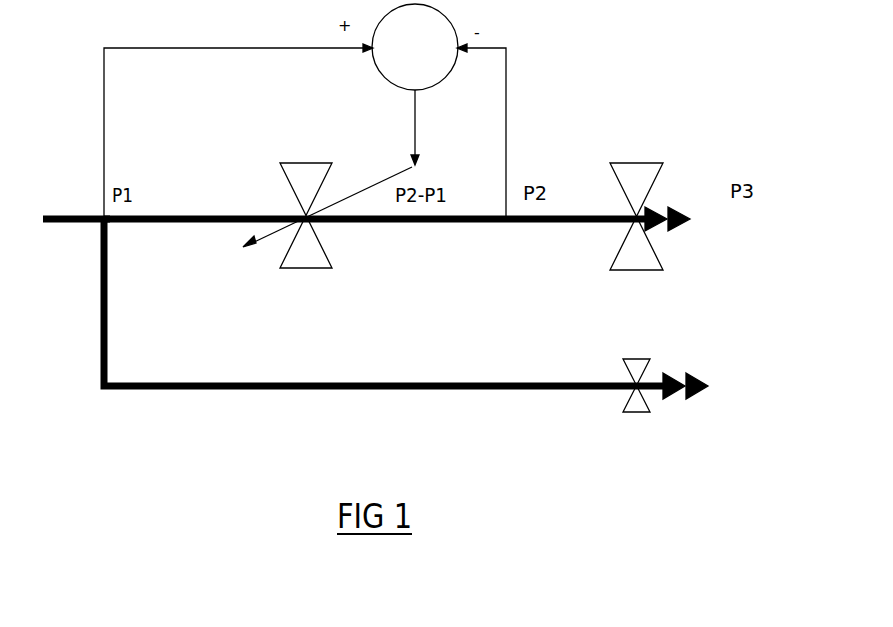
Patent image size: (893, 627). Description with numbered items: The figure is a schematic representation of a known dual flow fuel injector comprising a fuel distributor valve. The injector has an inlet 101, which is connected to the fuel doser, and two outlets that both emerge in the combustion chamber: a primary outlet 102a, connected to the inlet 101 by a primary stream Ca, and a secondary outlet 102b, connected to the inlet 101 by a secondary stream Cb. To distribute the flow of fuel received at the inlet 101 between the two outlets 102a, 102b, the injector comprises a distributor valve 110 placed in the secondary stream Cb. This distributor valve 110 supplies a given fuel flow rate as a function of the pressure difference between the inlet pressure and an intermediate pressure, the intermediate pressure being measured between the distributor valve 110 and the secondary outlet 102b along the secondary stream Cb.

The inlet 101 is at (70, 223).
The distributor valve 110 is at (283, 183).
The primary outlet 102a is at (707, 377).
The secondary outlet 102b is at (680, 208).
The primary stream Ca is at (413, 392).
The secondary stream Cb is at (397, 223).